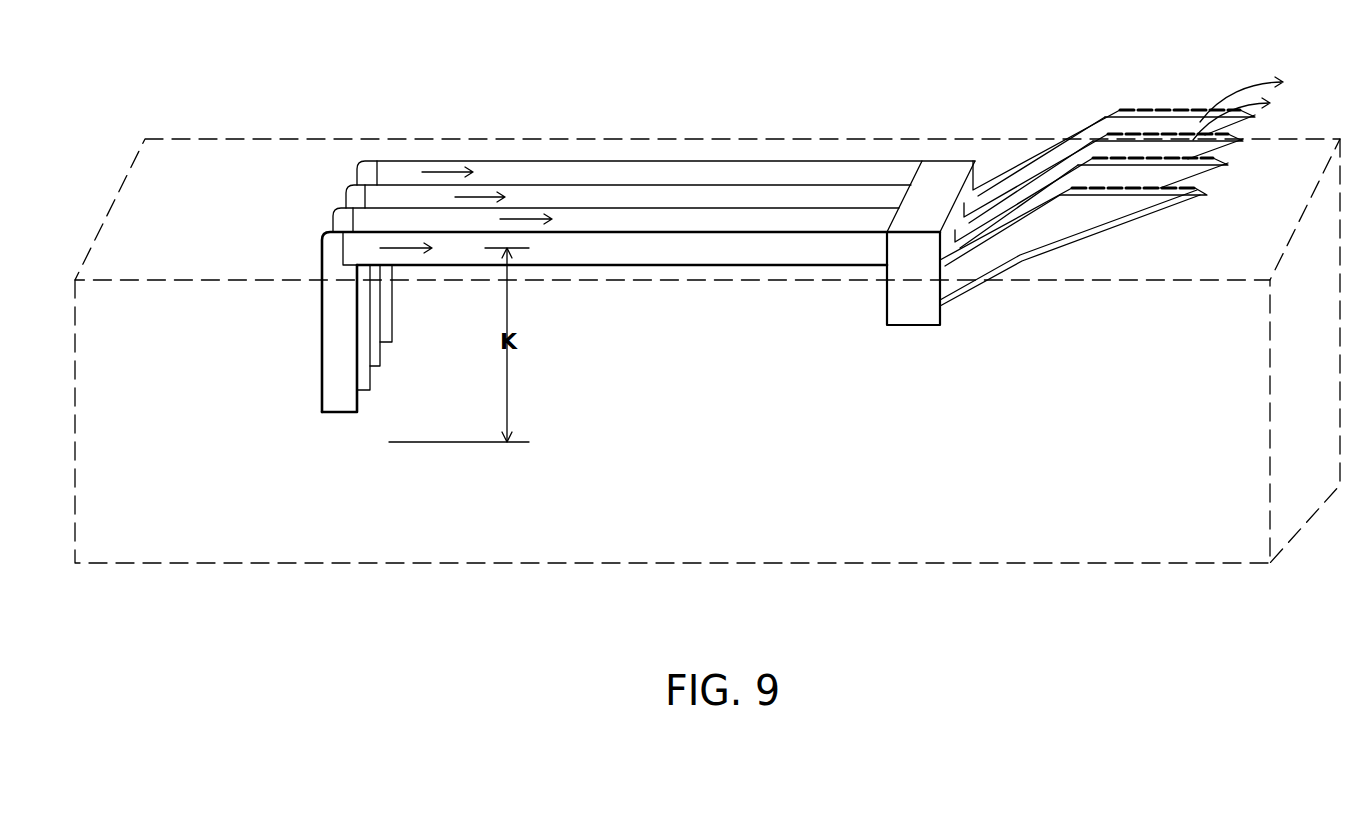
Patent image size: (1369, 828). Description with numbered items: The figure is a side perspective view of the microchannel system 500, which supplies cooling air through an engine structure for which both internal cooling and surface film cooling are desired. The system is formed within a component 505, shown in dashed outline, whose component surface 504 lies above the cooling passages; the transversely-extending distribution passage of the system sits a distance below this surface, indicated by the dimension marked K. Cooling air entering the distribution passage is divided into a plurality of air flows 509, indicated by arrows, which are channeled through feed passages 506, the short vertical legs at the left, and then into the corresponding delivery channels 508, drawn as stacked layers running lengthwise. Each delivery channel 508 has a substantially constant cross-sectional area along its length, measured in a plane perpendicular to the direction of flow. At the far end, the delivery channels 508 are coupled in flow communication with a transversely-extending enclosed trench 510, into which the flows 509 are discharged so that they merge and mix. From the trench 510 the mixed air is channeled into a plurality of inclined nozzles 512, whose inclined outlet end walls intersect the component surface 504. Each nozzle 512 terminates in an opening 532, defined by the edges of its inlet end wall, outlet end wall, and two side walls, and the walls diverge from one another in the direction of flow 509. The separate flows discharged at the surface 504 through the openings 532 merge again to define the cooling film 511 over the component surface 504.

The microchannel system 500 is at (313, 115).
The component surface 504 is at (245, 219).
The component 505 is at (862, 566).
The feed passages 506 is at (347, 348).
The delivery channels 508 is at (570, 245).
The air flow 509 is at (407, 248).
The enclosed trench 510 is at (927, 313).
The film 511 is at (1267, 100).
The inclined nozzles 512 is at (990, 247).
The opening 532 is at (1255, 115).